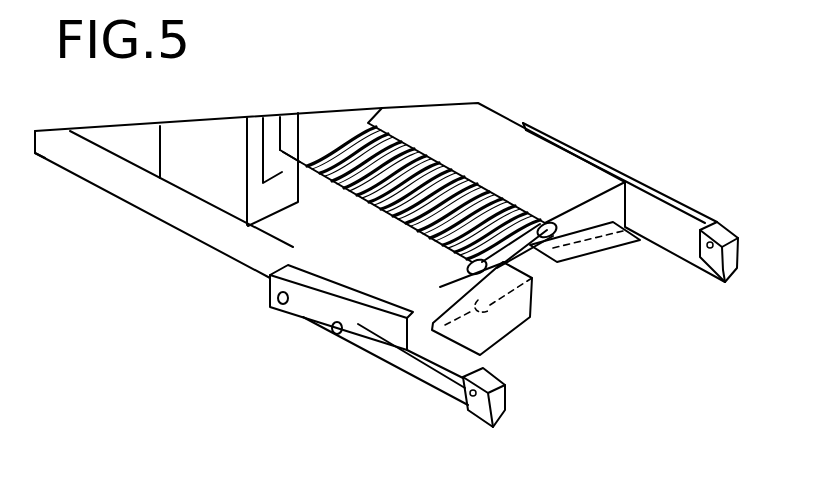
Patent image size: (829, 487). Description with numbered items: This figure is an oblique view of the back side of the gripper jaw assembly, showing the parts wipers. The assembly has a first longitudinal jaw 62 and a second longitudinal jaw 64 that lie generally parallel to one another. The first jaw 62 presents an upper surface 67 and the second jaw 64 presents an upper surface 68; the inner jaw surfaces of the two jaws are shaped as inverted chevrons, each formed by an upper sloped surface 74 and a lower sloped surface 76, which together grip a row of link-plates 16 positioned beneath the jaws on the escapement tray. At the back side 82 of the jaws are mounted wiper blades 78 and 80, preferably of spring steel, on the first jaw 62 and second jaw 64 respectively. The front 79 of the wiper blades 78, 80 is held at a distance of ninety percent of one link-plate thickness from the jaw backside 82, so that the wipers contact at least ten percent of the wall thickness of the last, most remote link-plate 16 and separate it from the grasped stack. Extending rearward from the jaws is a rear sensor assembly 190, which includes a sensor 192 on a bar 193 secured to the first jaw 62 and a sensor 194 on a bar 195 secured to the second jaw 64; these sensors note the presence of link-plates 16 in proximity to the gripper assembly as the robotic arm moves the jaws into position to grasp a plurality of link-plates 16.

The link-plates 16 is at (323, 180).
The first longitudinal jaw 62 is at (522, 121).
The second longitudinal jaw 64 is at (123, 183).
The upper surface 67 is at (450, 126).
The upper surface 68 is at (282, 231).
The upper sloped surface 74 is at (543, 224).
The lower sloped surface 76 is at (538, 268).
The wiper blade 78 is at (628, 252).
The front of wiper blades 79 is at (560, 232).
The wiper blade 80 is at (497, 347).
The back side of jaws 82 is at (606, 196).
The rear sensor assembly 190 is at (463, 382).
The sensor 192 is at (722, 223).
The bar 193 is at (690, 246).
The sensor 194 is at (470, 410).
The bar 195 is at (403, 363).